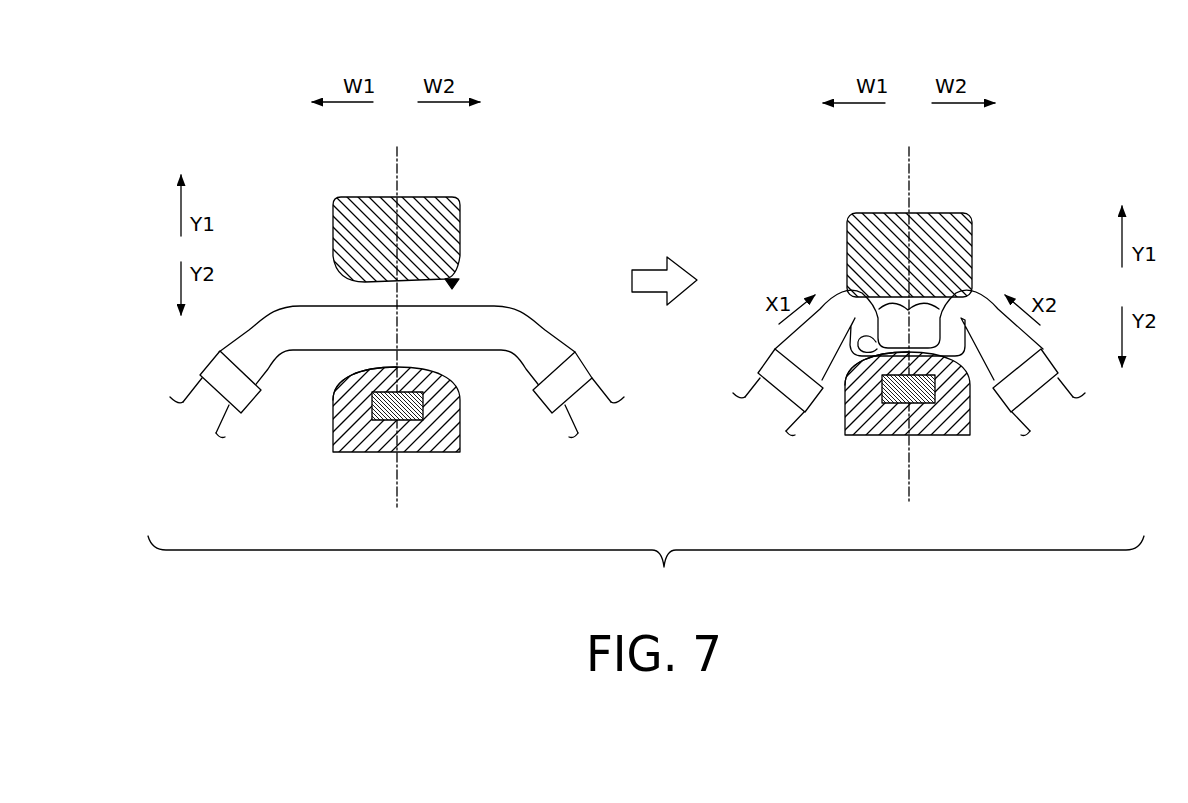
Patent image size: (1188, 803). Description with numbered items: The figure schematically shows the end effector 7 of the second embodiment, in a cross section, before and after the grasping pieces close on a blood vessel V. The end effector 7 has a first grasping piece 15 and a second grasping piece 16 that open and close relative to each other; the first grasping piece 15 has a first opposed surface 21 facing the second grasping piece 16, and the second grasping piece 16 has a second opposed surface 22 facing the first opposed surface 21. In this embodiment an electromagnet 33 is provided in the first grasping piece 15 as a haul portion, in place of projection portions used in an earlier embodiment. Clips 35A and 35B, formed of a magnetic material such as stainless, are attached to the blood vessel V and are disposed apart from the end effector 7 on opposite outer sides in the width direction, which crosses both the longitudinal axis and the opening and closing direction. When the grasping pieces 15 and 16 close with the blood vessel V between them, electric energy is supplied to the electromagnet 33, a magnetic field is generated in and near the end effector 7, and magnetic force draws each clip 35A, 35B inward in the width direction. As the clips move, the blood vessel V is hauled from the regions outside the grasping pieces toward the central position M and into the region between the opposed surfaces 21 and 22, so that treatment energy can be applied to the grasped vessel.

The end effector 7 is at (519, 177).
The first grasping piece 15 is at (471, 445).
The second grasping piece 16 is at (471, 233).
The first opposed surface 21 is at (340, 377).
The second opposed surface 22 is at (463, 283).
The electromagnet 33 is at (415, 424).
The clip 35A is at (240, 396).
The clip 35B is at (543, 401).
The blood vessel V is at (526, 328).
The central position M is at (404, 163).